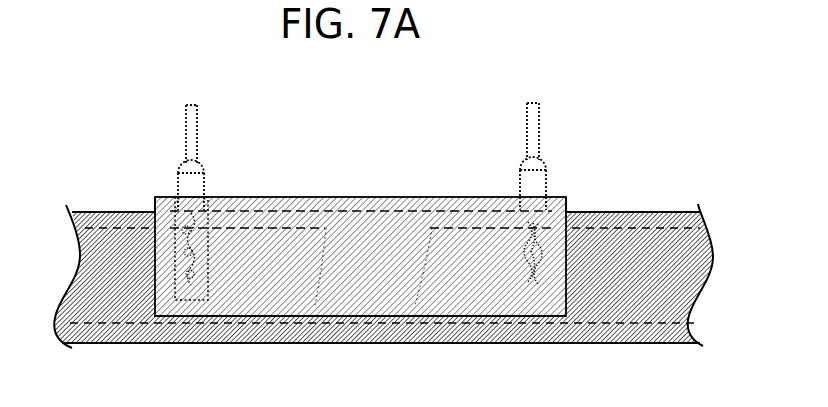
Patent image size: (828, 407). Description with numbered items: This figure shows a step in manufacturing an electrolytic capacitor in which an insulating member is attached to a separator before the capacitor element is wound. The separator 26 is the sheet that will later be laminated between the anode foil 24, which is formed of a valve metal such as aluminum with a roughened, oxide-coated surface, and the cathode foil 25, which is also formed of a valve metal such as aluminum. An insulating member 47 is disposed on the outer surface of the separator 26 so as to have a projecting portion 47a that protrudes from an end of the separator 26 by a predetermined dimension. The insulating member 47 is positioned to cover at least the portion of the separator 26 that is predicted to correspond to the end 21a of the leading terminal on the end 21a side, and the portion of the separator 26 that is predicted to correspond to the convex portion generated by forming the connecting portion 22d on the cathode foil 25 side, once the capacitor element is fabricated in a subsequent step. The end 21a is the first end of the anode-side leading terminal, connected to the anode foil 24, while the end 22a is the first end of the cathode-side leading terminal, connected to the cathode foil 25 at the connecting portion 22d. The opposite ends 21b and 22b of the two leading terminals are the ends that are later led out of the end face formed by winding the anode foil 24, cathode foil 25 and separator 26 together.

The end of leading terminal 21a is at (207, 257).
The end of leading terminal 21b is at (187, 187).
The end of leading terminal 22a is at (567, 200).
The end of leading terminal 22b is at (535, 180).
The connecting portion 22d is at (530, 273).
The anode foil 24 is at (170, 320).
The cathode foil 25 is at (592, 320).
The separator 26 is at (73, 327).
The insulating member 47 is at (360, 292).
The projecting portion 47a is at (155, 202).